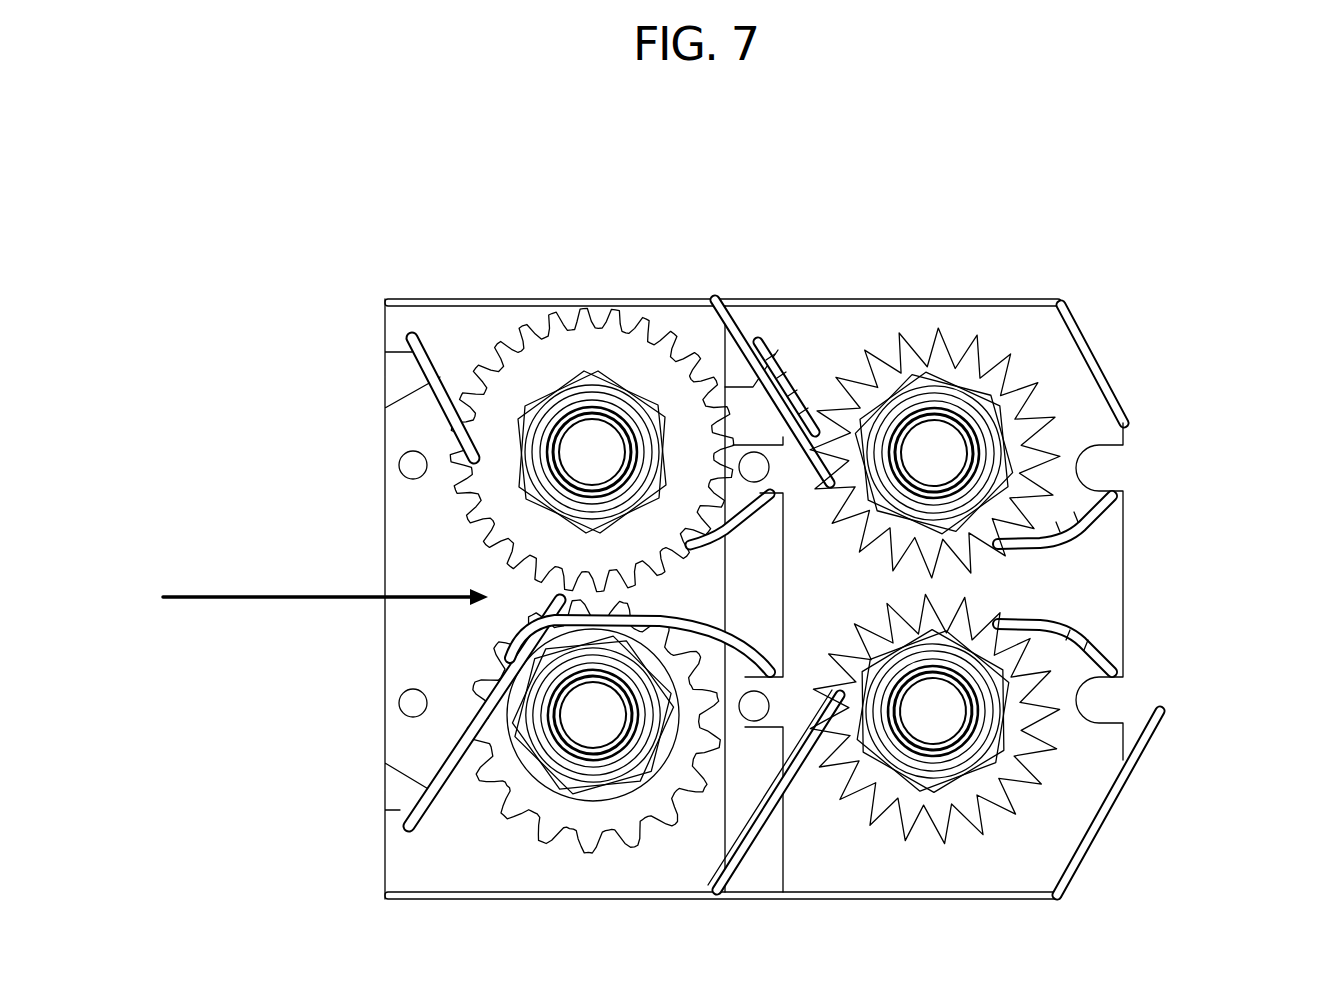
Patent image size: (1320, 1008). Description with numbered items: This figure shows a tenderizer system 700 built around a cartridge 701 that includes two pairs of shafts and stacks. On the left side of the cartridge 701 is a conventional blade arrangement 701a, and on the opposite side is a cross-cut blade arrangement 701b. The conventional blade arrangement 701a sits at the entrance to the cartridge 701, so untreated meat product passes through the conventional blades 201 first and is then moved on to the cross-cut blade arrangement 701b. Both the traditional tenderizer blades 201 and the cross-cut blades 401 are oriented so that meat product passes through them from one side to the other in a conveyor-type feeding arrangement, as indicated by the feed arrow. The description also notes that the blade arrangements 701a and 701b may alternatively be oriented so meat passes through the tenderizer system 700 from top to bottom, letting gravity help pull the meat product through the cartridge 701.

The tenderizer system 700 is at (292, 277).
The cartridge 701 is at (1137, 293).
The conventional blade arrangement 701a is at (476, 573).
The cross-cut blade arrangement 701b is at (988, 571).
The conventional blades 201 is at (452, 483).
The cross-cut blades 401 is at (1052, 404).